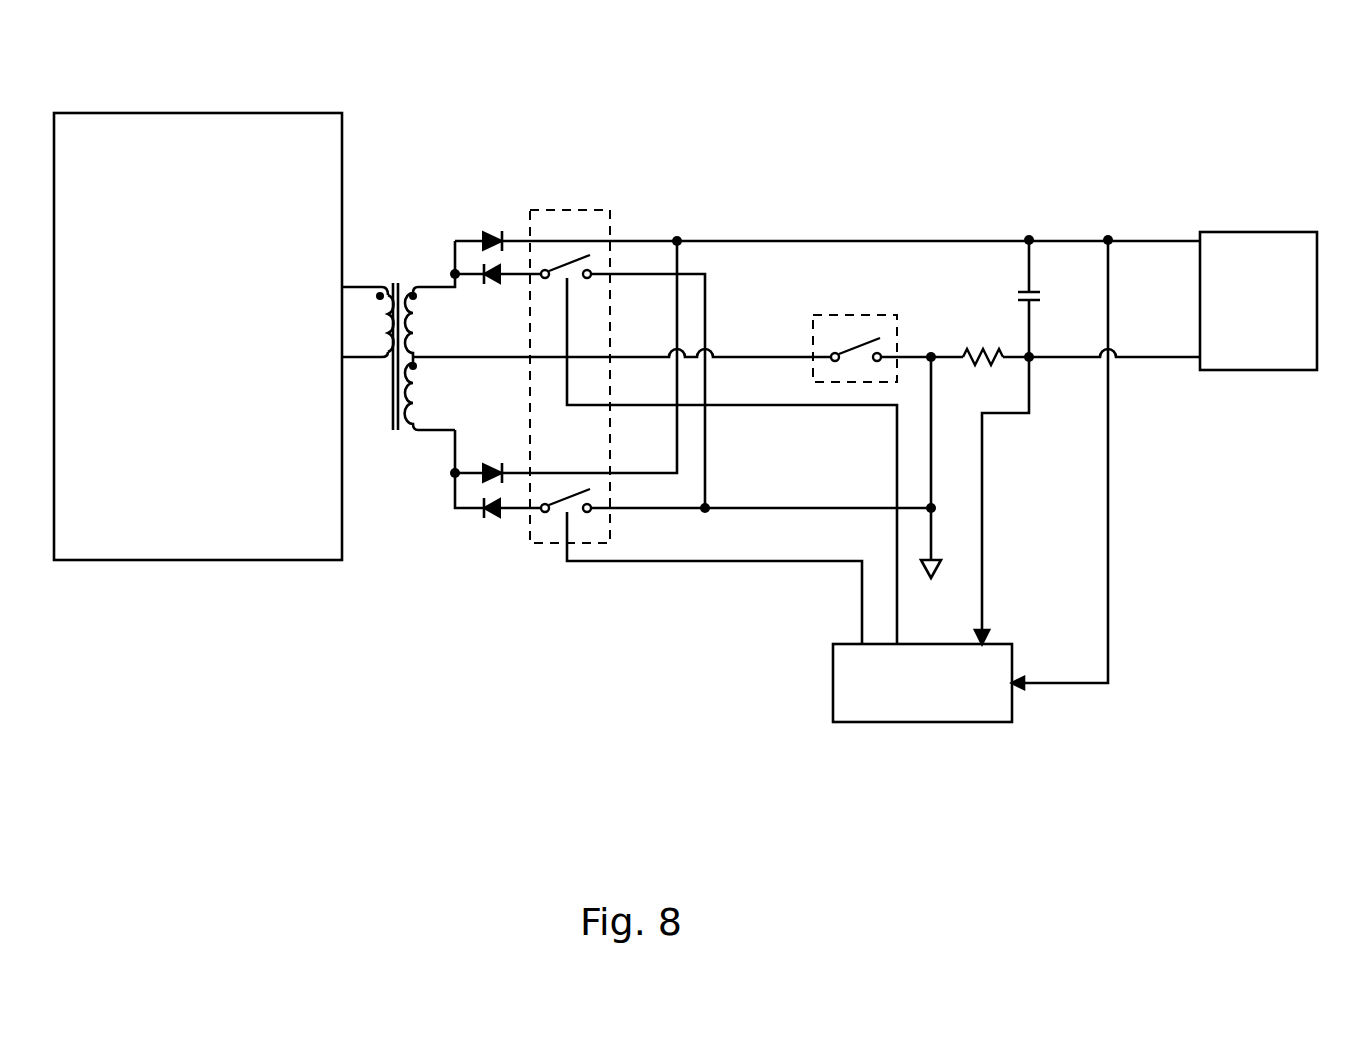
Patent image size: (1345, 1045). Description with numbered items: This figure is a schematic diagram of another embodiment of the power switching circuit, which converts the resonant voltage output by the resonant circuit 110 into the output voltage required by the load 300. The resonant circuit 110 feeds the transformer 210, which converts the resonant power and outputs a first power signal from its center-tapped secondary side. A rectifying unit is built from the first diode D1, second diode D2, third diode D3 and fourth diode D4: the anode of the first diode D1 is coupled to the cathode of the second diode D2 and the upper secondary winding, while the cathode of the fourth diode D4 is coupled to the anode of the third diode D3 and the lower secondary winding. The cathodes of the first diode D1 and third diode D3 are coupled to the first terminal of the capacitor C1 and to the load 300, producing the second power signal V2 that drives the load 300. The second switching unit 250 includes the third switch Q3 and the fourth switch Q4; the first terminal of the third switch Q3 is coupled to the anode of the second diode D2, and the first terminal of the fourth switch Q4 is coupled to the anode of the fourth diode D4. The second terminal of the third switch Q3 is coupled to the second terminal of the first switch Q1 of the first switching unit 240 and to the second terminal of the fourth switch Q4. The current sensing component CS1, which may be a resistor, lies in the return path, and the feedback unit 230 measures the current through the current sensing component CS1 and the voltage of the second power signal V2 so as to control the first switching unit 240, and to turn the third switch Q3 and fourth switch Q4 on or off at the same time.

The resonant circuit 110 is at (197, 112).
The transformer 210 is at (393, 283).
The second switching unit 250 is at (553, 208).
The third switch Q3 is at (566, 253).
The fourth switch Q4 is at (558, 513).
The first diode D1 is at (492, 232).
The second diode D2 is at (490, 290).
The third diode D3 is at (491, 464).
The fourth diode D4 is at (490, 522).
The first switch Q1 is at (848, 338).
The first switching unit 240 is at (856, 313).
The second power signal V2 is at (1030, 236).
The current sensing component CS1 is at (977, 346).
The capacitor C1 is at (1042, 297).
The load 300 is at (1237, 230).
The feedback unit 230 is at (945, 725).